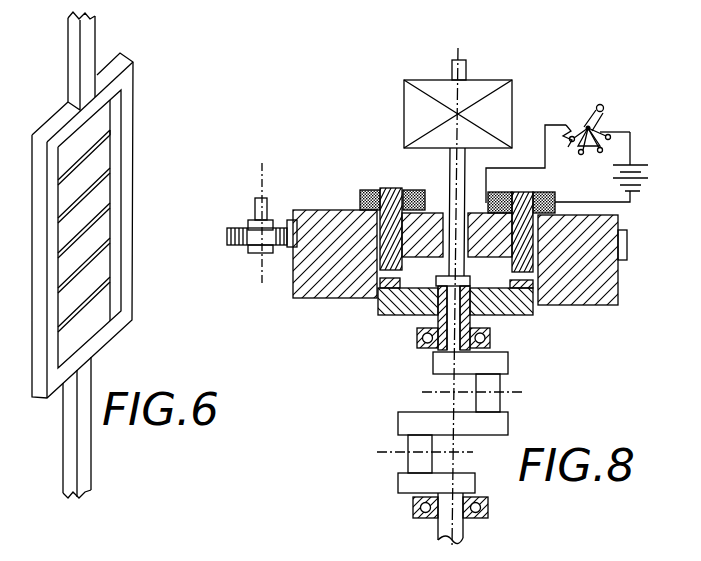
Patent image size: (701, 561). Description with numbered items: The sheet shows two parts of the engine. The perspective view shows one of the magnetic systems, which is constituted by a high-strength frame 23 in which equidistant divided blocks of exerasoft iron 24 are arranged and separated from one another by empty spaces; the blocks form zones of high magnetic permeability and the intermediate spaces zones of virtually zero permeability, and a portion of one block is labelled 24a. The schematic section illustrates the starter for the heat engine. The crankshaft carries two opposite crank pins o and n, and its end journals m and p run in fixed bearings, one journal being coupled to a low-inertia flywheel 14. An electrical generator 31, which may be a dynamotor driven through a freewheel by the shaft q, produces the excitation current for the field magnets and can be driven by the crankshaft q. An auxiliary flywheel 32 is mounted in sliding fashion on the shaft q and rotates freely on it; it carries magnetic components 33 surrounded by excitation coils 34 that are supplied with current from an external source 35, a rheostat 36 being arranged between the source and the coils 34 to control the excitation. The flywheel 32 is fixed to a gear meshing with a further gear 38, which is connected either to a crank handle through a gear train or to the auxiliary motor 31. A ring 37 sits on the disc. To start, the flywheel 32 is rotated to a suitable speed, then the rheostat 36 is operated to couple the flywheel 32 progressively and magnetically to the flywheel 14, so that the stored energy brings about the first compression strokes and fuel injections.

In FIG. 6, the frame 23 is at (128, 100).
In FIG. 6, the divided blocks of exerasoft iron 24 is at (110, 222).
In FIG. 6, the slat bent portion 24a is at (98, 272).
In FIG. 8, the electrical generator 31 is at (502, 112).
In FIG. 8, the auxiliary flywheel 32 is at (604, 288).
In FIG. 8, the magnetic components 33 is at (388, 237).
In FIG. 8, the excitation coils 34 is at (363, 197).
In FIG. 8, the external source 35 is at (645, 167).
In FIG. 8, the rheostat 36 is at (588, 128).
In FIG. 8, the ring 37 is at (381, 286).
In FIG. 8, the further gear 38 is at (242, 228).
In FIG. 8, the low-inertia flywheel 14 is at (507, 303).
In FIG. 8, the end journal p is at (447, 318).
In FIG. 8, the shaft q is at (453, 178).
In FIG. 8, the crank pin o is at (486, 403).
In FIG. 8, the crank pin n is at (420, 460).
In FIG. 8, the end journal m is at (443, 523).